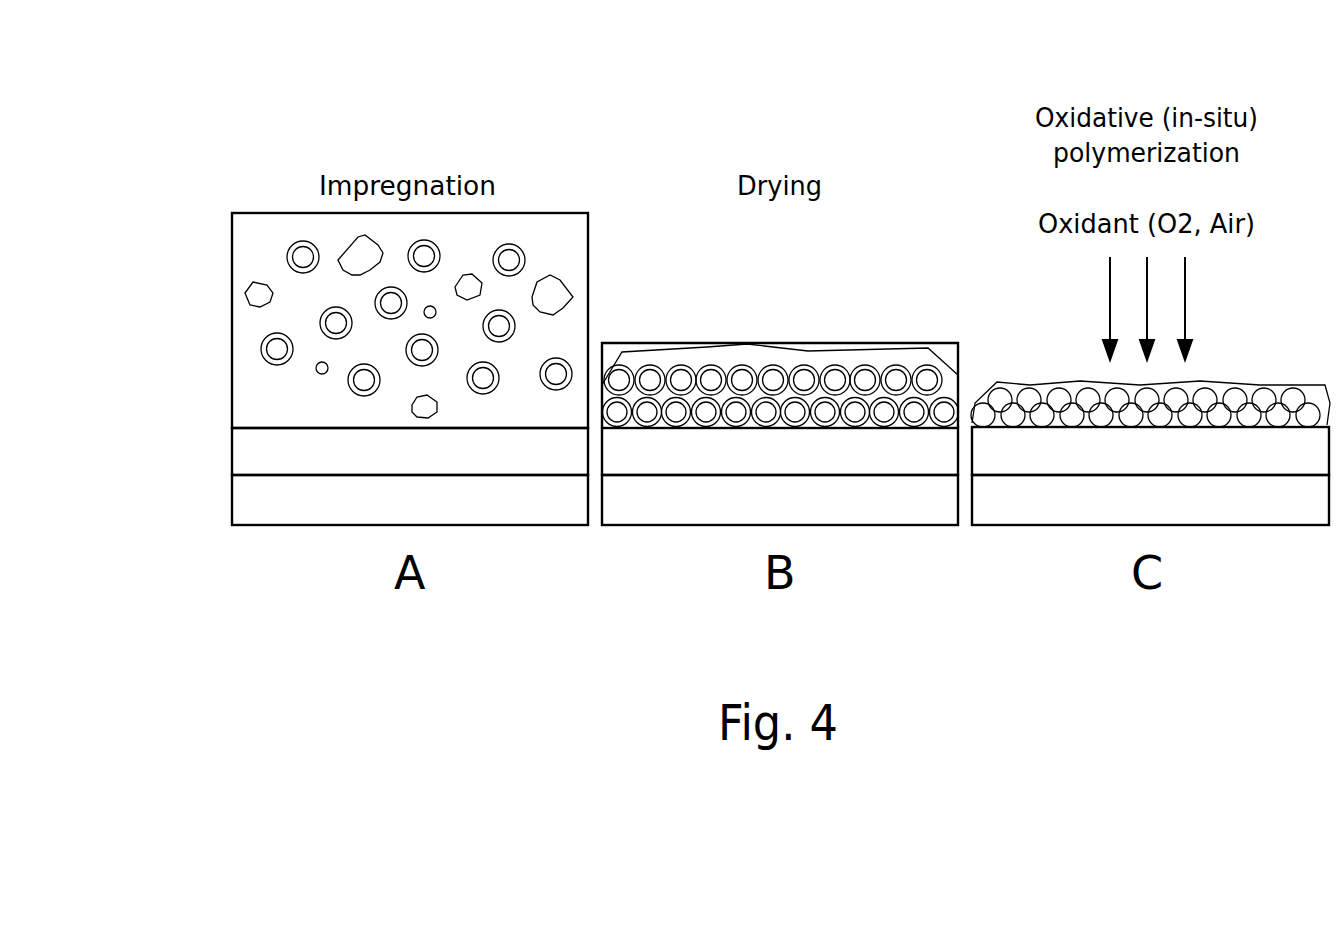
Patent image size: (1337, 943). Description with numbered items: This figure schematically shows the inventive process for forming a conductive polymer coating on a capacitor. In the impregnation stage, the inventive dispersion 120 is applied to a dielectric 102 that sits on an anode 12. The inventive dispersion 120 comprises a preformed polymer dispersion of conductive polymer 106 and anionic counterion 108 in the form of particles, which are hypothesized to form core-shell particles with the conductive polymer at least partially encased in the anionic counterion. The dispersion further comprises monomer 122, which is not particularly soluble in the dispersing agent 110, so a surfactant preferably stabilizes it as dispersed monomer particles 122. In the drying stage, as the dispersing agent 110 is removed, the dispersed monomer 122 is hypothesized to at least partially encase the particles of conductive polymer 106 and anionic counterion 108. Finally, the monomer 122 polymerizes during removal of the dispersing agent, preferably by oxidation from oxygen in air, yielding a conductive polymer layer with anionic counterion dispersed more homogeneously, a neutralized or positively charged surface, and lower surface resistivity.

The anode 12 is at (257, 503).
The dielectric 102 is at (248, 455).
The conductive polymer 106 is at (302, 254).
The anionic counterion 108 is at (292, 258).
The dispersing agent 110 is at (533, 232).
The inventive dispersion 120 is at (596, 193).
The monomer 122 is at (558, 293).